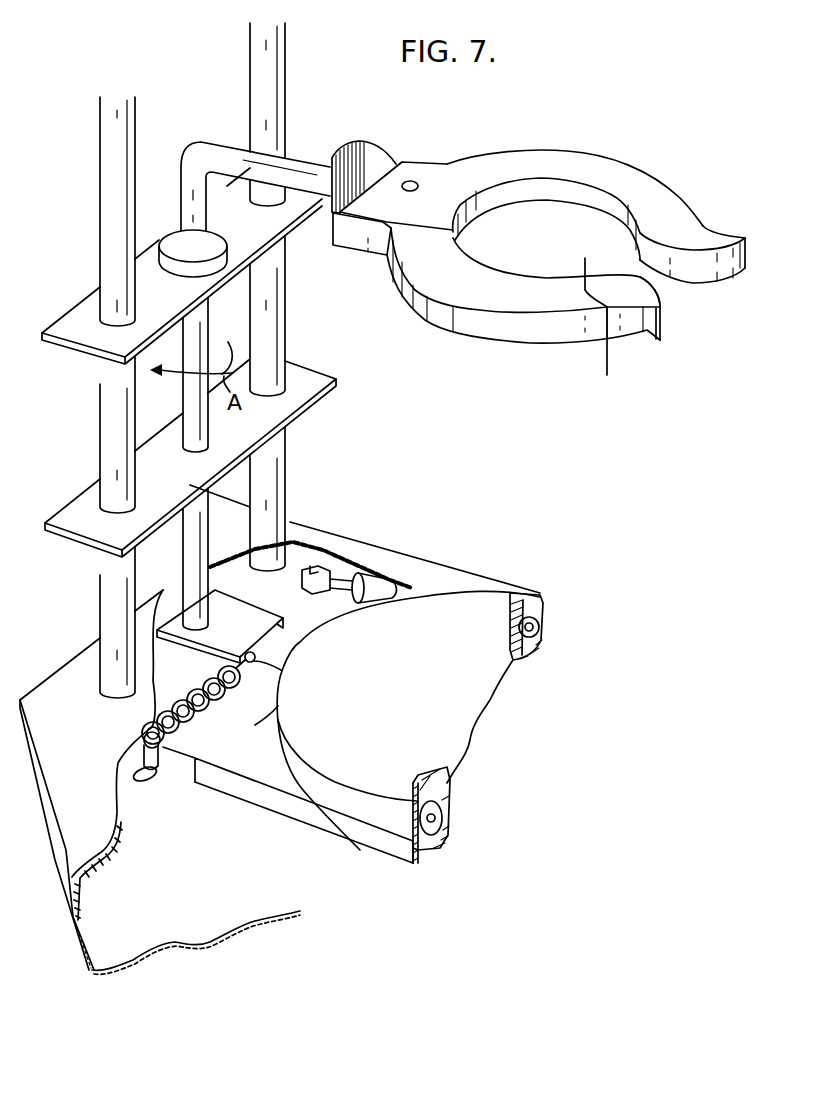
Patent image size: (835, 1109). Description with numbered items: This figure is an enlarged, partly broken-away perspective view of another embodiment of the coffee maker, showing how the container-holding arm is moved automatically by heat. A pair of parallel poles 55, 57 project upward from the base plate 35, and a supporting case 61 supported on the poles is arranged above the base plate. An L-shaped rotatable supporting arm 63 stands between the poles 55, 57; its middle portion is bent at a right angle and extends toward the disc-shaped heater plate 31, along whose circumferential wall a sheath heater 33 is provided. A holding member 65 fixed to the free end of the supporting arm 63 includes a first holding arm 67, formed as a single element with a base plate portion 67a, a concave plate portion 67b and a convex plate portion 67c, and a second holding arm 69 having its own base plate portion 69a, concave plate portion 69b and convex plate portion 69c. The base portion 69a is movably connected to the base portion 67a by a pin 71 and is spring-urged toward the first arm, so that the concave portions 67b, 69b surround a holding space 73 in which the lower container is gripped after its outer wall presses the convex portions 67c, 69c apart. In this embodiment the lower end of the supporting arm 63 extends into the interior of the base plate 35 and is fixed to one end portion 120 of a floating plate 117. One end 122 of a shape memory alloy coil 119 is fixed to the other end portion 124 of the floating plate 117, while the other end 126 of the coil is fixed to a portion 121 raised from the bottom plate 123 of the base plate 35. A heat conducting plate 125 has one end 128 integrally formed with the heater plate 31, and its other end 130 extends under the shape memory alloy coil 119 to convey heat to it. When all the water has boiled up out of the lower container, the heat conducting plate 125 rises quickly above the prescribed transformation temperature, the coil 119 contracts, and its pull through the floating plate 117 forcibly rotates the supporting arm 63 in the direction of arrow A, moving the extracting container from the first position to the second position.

The heater plate 31 is at (457, 693).
The sheath heater 33 is at (433, 847).
The base plate 35 is at (56, 658).
The pole 55 is at (108, 597).
The pole 57 is at (284, 467).
The supporting case 61 is at (68, 310).
The supporting arm 63 is at (197, 142).
The holding member 65 is at (546, 235).
The first holding arm 67 is at (549, 187).
The base plate portion 67a is at (450, 164).
The concave plate portion 67b is at (642, 177).
The convex plate portion 67c is at (712, 238).
The second holding arm 69 is at (528, 306).
The base plate portion 69a is at (365, 244).
The concave plate portion 69b is at (468, 322).
The convex plate portion 69c is at (660, 322).
The pin 71 is at (413, 182).
The holding space 73 is at (607, 327).
The floating plate 117 is at (258, 611).
The shape memory alloy coil 119 is at (270, 711).
The end portion of floating plate 120 is at (165, 635).
The raised portion 121 is at (152, 776).
The end of shape memory alloy coil 122 is at (284, 672).
The bottom plate 123 is at (180, 928).
The end portion of floating plate 124 is at (256, 655).
The heat conducting plate 125 is at (234, 806).
The end of shape memory alloy coil 126 is at (136, 757).
The end of heat conducting plate 128 is at (303, 797).
The end of heat conducting plate 130 is at (150, 716).